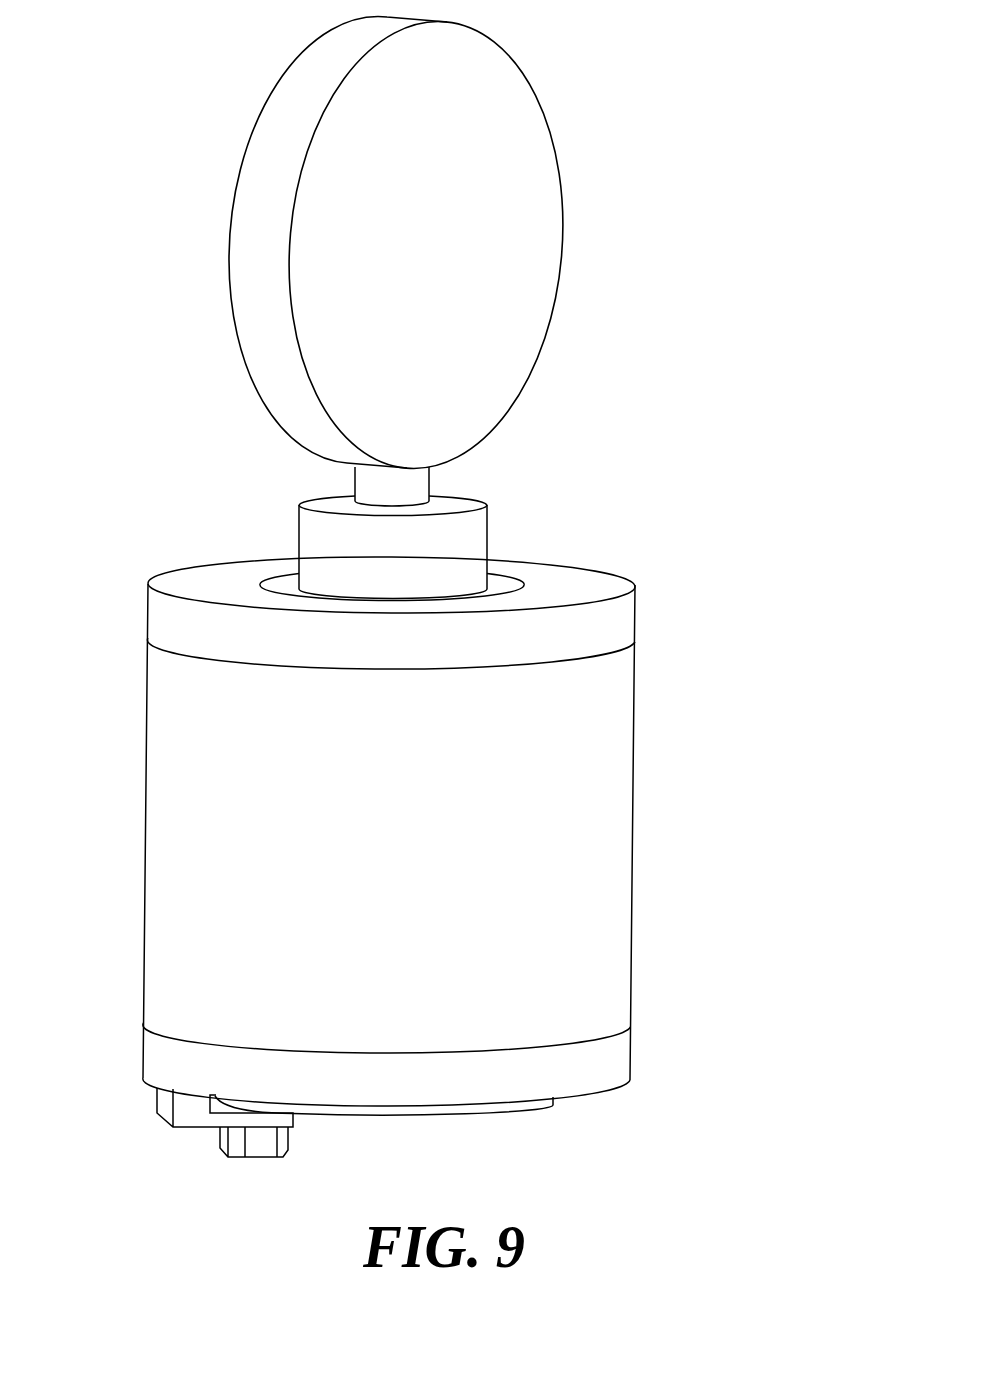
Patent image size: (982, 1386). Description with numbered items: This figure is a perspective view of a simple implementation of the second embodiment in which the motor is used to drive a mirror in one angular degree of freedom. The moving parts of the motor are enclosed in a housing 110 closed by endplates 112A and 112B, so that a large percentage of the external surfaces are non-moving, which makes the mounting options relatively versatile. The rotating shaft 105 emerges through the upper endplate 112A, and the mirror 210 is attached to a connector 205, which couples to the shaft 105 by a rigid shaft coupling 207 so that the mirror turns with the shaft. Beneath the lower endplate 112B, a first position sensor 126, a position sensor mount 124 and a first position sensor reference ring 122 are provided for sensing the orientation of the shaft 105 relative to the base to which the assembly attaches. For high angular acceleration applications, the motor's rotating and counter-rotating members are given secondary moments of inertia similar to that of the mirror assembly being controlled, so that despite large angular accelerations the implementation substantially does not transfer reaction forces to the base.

The mirror 210 is at (512, 233).
The connector 205 is at (405, 486).
The rigid shaft coupling 207 is at (318, 543).
The rotating shaft 105 is at (472, 592).
The housing 110 is at (423, 890).
The endplate 112A is at (613, 622).
The endplate 112B is at (602, 1060).
The first position sensor reference ring 122 is at (433, 1113).
The position sensor mount 124 is at (185, 1108).
The first position sensor 126 is at (253, 1145).